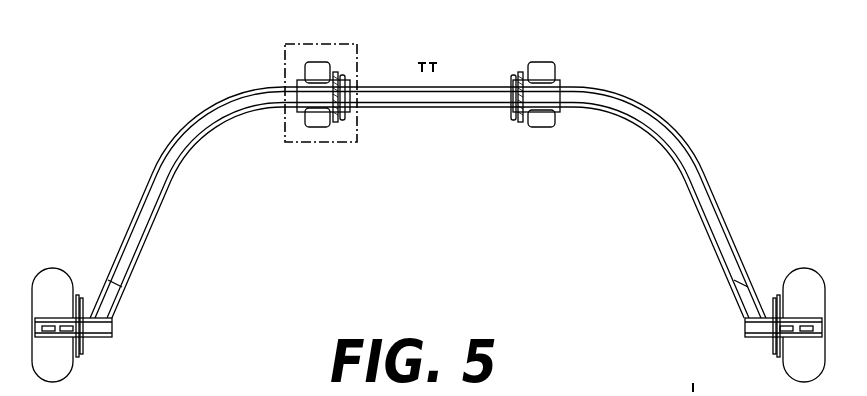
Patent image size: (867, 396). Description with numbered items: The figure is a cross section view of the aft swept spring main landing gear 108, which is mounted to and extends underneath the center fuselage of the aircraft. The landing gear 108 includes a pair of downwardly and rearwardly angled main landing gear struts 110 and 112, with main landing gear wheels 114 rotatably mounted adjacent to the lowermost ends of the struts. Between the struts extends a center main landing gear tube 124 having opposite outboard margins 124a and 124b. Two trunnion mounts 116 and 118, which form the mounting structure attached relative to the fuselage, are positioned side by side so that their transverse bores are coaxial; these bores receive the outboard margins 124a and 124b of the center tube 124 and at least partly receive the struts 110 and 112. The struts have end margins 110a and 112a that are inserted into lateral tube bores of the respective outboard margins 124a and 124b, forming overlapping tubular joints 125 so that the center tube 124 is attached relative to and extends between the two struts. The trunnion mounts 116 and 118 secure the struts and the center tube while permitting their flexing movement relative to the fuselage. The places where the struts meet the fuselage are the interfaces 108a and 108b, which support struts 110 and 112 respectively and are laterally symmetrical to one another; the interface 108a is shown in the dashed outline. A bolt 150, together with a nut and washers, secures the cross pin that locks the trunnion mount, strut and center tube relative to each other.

The aft swept spring main landing gear 108 is at (682, 89).
The interface 108a is at (359, 60).
The interface 108b is at (508, 73).
The main landing gear strut 110 is at (154, 229).
The end margin 110a is at (284, 133).
The main landing gear strut 112 is at (703, 214).
The end margin 112a is at (562, 129).
The main landing gear wheels 114 is at (52, 264).
The trunnion mount 116 is at (284, 63).
The trunnion mount 118 is at (564, 65).
The center main landing gear tube 124 is at (434, 112).
The outboard margin 124a is at (357, 152).
The outboard margin 124b is at (521, 134).
The overlapping tubular joints 125 is at (284, 78).
The bolt 150 is at (699, 374).